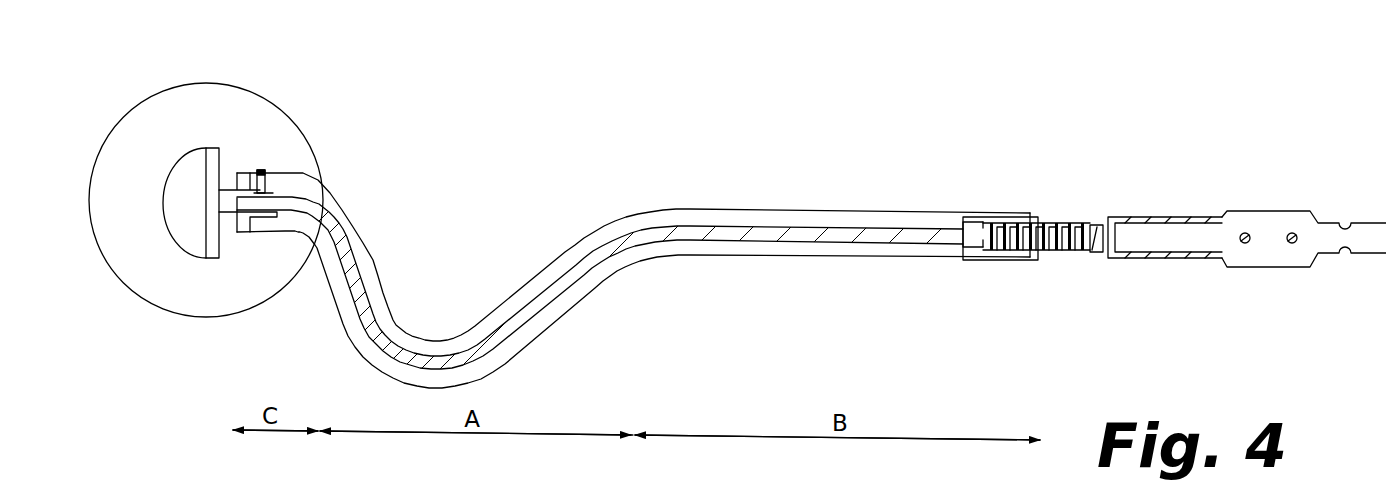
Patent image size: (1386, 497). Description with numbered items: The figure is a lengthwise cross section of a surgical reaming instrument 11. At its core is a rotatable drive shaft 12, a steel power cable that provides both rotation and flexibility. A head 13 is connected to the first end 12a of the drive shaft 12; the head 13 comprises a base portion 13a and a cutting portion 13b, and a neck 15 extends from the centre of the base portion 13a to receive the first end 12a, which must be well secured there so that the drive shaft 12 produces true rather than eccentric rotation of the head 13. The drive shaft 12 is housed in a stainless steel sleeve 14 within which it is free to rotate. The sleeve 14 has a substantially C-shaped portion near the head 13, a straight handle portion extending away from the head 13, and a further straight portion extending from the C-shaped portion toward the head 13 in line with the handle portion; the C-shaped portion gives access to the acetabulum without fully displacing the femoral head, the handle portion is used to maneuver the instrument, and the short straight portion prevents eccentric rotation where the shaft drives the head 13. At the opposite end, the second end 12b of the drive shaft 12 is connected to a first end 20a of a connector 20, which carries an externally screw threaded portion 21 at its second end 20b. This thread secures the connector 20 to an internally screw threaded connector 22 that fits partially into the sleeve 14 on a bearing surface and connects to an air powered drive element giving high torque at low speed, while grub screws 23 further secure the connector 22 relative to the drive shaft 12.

The surgical reaming instrument 11 is at (840, 172).
The rotatable drive shaft 12 is at (637, 237).
The first end of the drive shaft 12a is at (300, 205).
The second end of the drive shaft 12b is at (947, 237).
The head 13 is at (193, 165).
The base portion 13a is at (222, 163).
The cutting portion 13b is at (168, 237).
The sleeve 14 is at (837, 258).
The neck 15 is at (227, 212).
The connector 20 is at (1050, 258).
The first end of the connector 20a is at (977, 257).
The second end of the connector 20b is at (1087, 253).
The externally screw threaded portion 21 is at (1072, 225).
The internally screw threaded connector 22 is at (1238, 212).
The grub screws 23 is at (1293, 243).